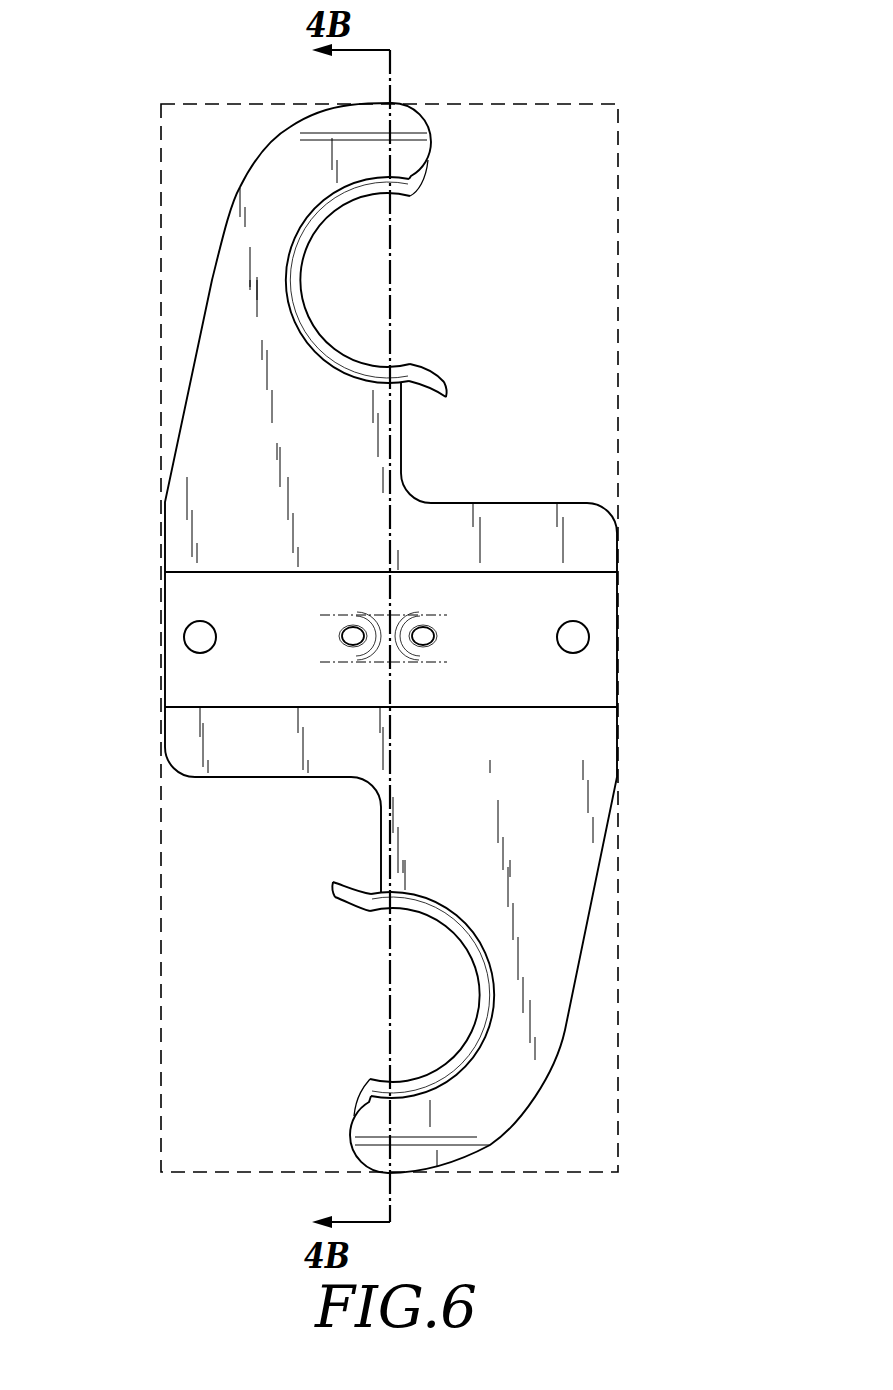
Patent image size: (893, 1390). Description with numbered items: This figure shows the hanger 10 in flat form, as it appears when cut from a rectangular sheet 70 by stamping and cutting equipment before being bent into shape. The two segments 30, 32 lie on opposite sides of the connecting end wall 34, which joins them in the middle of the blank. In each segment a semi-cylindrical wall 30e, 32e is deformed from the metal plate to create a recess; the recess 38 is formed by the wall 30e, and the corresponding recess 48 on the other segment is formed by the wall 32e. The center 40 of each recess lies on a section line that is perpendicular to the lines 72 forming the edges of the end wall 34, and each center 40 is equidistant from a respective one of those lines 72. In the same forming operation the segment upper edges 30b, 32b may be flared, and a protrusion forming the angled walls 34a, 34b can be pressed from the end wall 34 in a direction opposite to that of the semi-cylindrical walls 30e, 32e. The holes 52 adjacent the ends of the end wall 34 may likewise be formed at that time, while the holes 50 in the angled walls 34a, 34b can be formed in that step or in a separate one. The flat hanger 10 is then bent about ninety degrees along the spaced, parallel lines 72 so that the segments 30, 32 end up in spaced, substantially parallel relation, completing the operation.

The hanger 10 is at (447, 476).
The segment 30 is at (208, 448).
The segment upper edge 30b is at (431, 147).
The semi-cylindrical wall 30e is at (311, 358).
The segment 32 is at (560, 913).
The segment upper edge 32b is at (353, 1117).
The semi-cylindrical wall 32e is at (445, 903).
The connecting end wall 34 is at (607, 665).
The angled wall 34a is at (360, 645).
The angled wall 34b is at (420, 647).
The recess 38 is at (298, 276).
The center of recess 40 is at (400, 273).
The lower channel 48 is at (473, 973).
The holes 50 is at (350, 626).
The holes 52 is at (192, 628).
The rectangular sheet 70 is at (618, 222).
The lines 72 is at (590, 570).